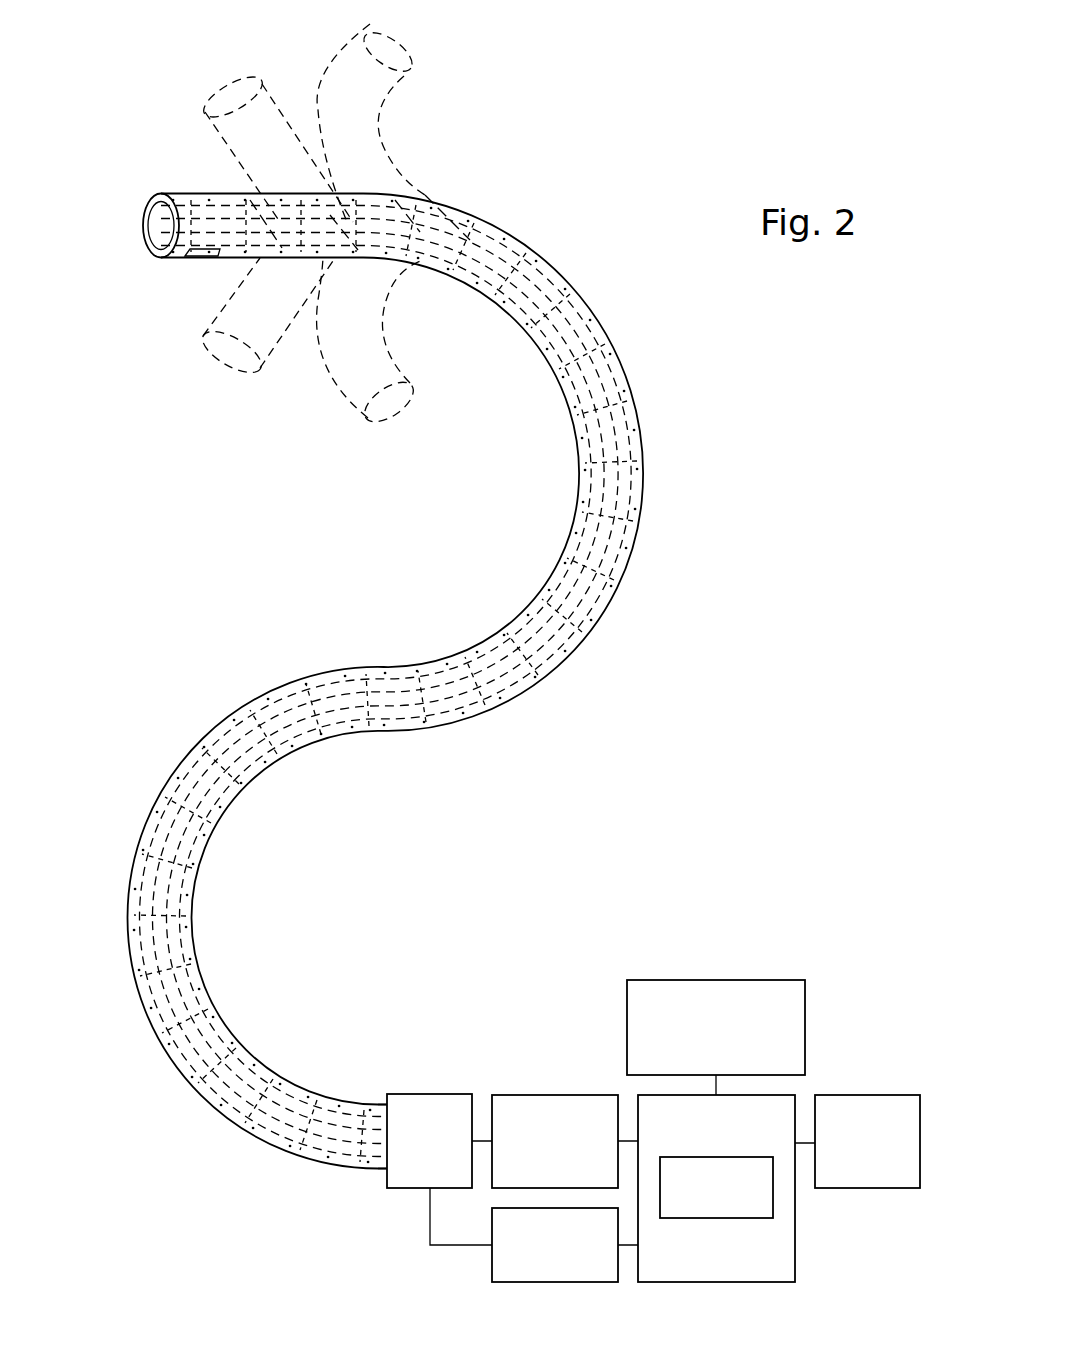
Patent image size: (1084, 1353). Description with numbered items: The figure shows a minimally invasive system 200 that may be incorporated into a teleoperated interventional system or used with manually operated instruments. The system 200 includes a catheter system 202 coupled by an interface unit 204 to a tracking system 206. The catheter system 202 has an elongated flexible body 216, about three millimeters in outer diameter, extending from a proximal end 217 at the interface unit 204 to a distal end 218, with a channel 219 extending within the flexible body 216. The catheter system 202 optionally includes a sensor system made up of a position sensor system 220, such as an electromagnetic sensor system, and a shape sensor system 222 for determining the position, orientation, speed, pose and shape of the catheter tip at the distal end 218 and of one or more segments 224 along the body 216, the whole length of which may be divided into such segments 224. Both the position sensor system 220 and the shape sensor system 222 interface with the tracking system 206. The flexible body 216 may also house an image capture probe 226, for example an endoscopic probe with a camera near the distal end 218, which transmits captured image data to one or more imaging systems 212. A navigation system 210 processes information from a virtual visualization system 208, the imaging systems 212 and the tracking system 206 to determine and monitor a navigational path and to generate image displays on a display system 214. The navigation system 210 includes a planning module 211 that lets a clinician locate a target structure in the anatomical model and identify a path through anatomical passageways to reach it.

The minimally invasive system 200 is at (612, 186).
The catheter system 202 is at (645, 392).
The interface unit 204 is at (410, 1156).
The tracking system 206 is at (560, 1094).
The virtual visualization system 208 is at (806, 1028).
The navigation system 210 is at (799, 1236).
The planning module 211 is at (725, 1220).
The imaging system 212 is at (492, 1252).
The display system 214 is at (868, 1190).
The elongated flexible body 216 is at (312, 675).
The proximal end 217 is at (360, 1183).
The distal end 218 is at (172, 186).
The channel 219 is at (143, 227).
The position sensor system 220 is at (203, 258).
The shape sensor system 222 is at (648, 454).
The segments 224 is at (607, 597).
The image capture probe 226 is at (581, 490).